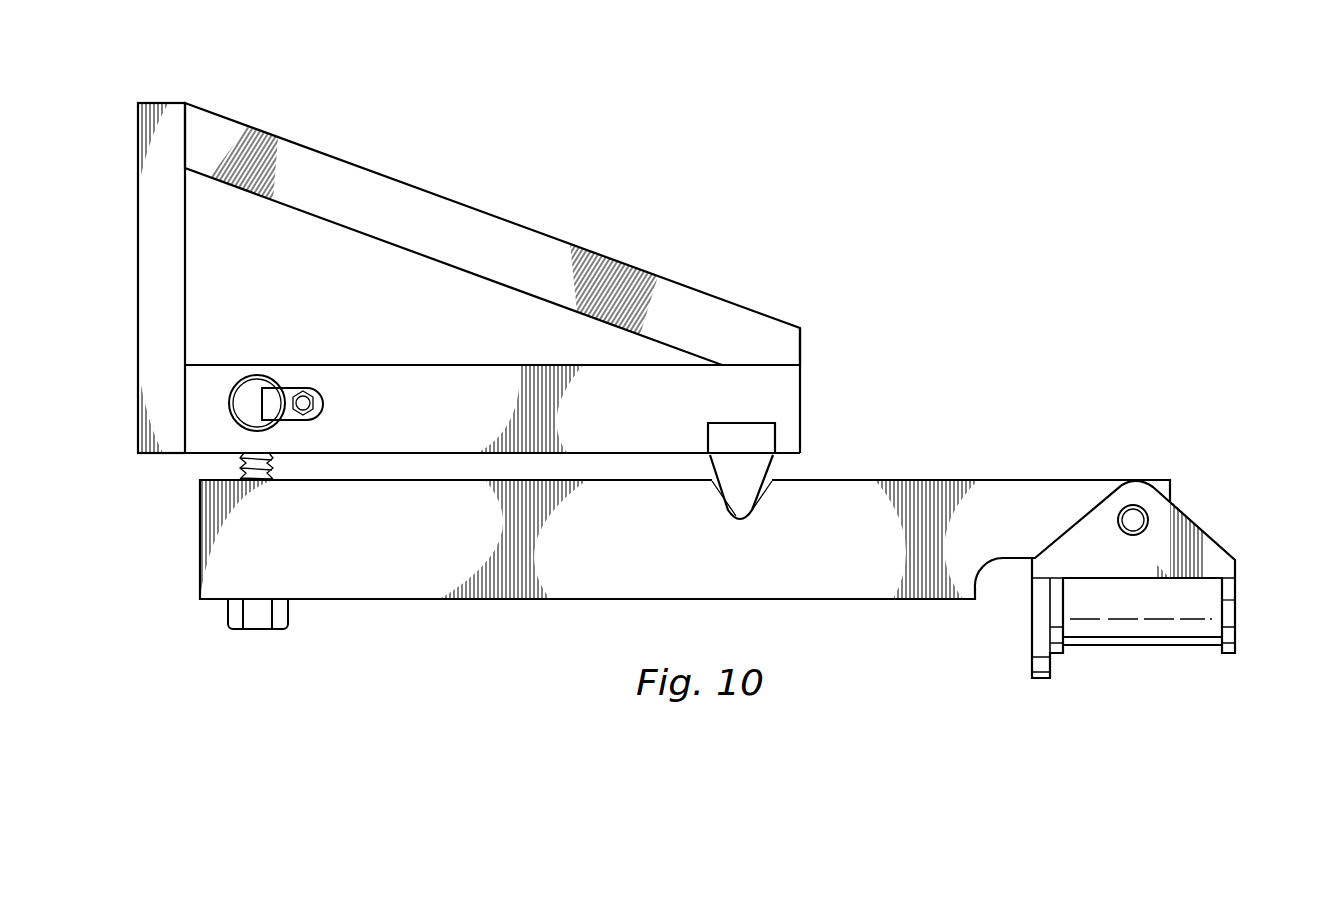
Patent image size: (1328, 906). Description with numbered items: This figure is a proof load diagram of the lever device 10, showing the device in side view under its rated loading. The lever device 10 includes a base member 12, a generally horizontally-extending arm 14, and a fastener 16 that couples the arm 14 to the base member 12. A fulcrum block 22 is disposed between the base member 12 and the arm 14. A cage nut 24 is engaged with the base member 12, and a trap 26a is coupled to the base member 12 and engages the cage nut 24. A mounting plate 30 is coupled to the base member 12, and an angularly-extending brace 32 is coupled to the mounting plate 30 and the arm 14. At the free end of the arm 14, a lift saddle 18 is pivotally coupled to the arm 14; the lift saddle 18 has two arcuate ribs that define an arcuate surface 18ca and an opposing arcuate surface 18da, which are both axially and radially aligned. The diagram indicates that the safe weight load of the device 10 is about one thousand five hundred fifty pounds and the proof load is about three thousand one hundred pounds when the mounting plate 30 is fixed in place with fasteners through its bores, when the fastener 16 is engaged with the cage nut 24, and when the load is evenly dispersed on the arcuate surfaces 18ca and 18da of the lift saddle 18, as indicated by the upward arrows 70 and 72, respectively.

The lever device 10 is at (714, 128).
The base member 12 is at (435, 360).
The horizontally-extending arm 14 is at (406, 603).
The fastener 16 is at (257, 635).
The lift saddle 18 is at (1030, 628).
The arcuate surface 18ca is at (1055, 603).
The arcuate surface 18da is at (1230, 603).
The fulcrum block 22 is at (737, 422).
The cage nut 24 is at (222, 390).
The trap 26a is at (324, 403).
The mounting plate 30 is at (136, 275).
The angularly-extending brace 32 is at (489, 215).
The arrow 70 is at (1059, 660).
The arrow 72 is at (1228, 660).